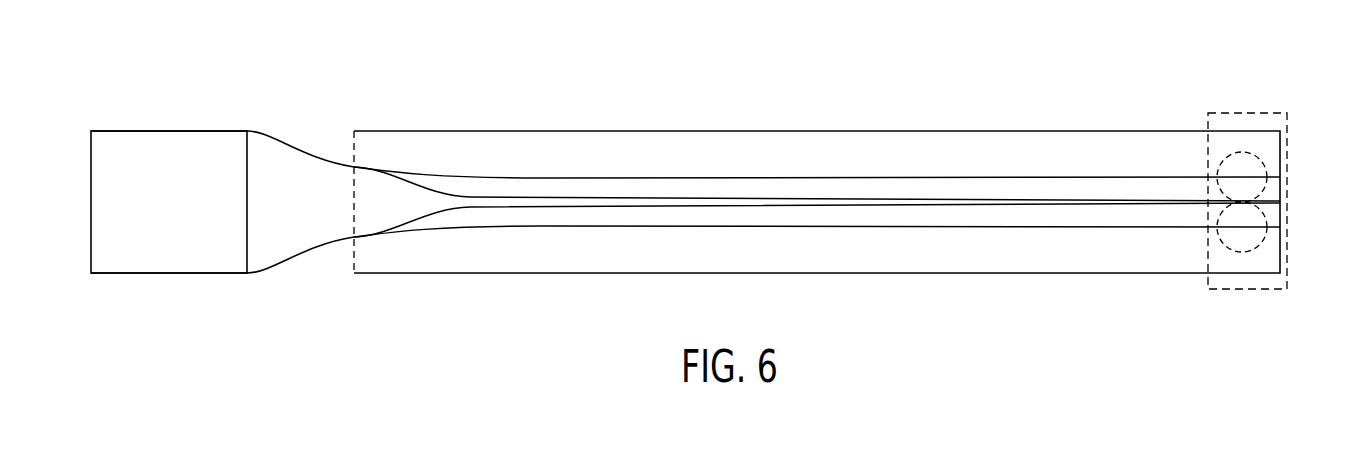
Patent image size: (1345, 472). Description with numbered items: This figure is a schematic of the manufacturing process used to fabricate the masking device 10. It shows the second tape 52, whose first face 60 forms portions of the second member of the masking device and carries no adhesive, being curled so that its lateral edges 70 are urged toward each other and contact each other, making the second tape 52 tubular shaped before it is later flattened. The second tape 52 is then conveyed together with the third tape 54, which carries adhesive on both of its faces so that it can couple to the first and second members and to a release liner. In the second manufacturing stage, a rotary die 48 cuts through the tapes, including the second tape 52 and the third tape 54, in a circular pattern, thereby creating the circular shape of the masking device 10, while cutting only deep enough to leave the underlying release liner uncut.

The masking device 10 is at (1290, 187).
The rotary die 48 is at (1243, 113).
The second tape 52 is at (305, 134).
The third tape 54 is at (648, 114).
The first face 60 is at (179, 216).
The lateral edges 70 is at (185, 131).